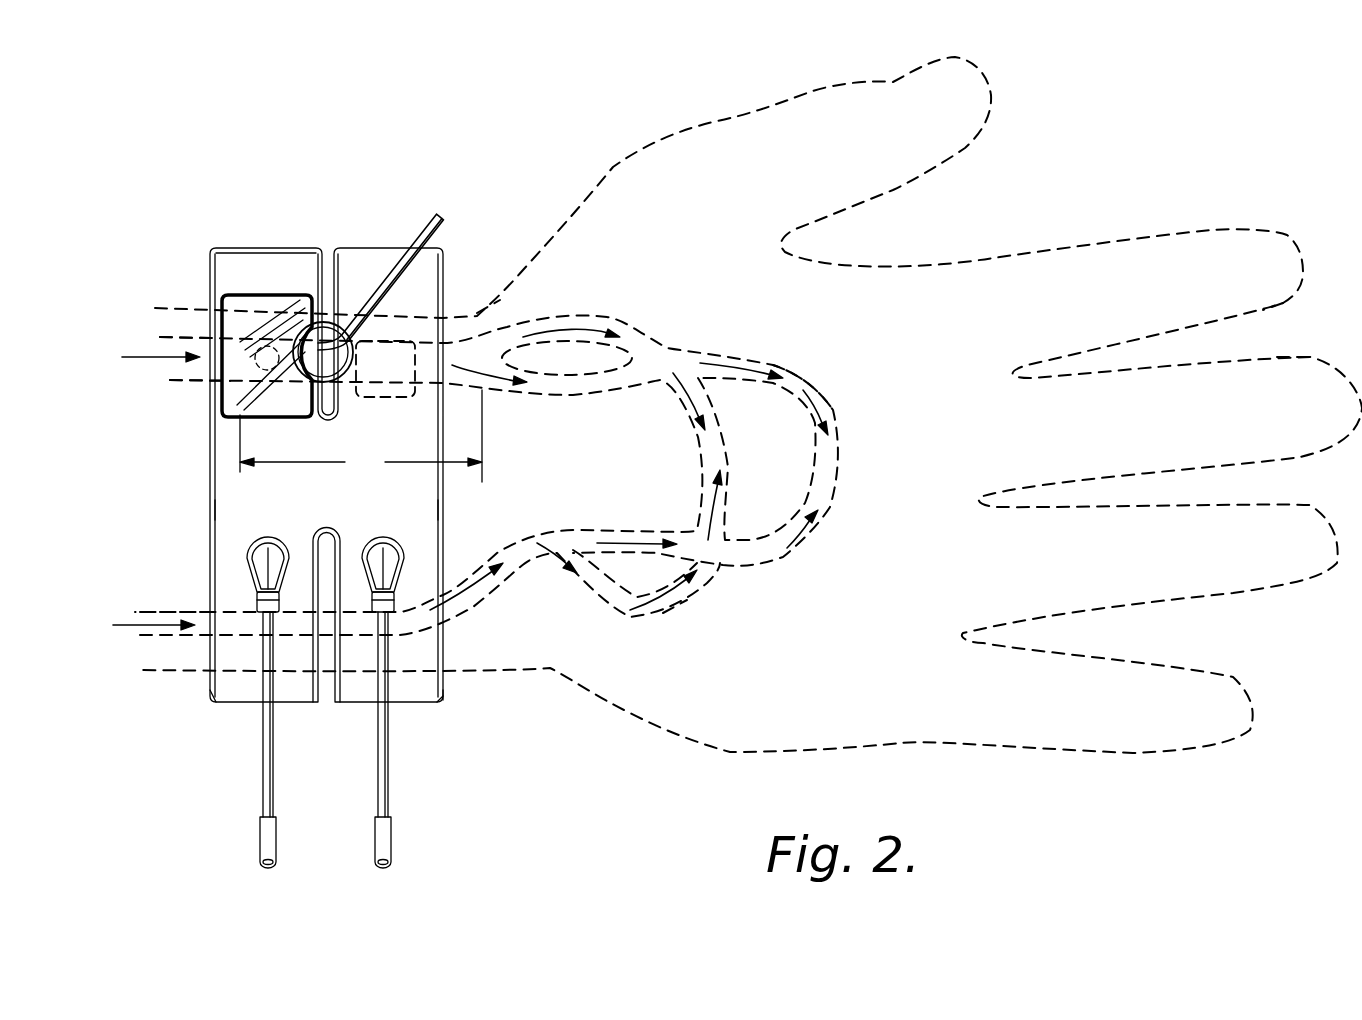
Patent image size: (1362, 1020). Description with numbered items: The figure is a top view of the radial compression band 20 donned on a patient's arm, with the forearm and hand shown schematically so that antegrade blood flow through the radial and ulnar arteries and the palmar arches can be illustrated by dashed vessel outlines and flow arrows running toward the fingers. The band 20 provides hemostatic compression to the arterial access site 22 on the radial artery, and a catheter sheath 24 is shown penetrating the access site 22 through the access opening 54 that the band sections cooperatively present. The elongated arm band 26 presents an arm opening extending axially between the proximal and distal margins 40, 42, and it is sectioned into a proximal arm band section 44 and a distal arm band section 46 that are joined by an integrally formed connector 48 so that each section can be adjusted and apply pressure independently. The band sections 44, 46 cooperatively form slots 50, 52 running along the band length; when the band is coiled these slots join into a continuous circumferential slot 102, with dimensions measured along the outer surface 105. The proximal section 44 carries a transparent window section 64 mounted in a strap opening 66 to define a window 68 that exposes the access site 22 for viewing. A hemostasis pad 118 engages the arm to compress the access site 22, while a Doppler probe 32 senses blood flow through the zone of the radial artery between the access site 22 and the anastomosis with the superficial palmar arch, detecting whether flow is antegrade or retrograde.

The radial compression band 20 is at (1137, 77).
The arterial access site 22 is at (268, 332).
The catheter sheath 24 is at (428, 220).
The arm band 26 is at (443, 700).
The Doppler probe 32 is at (375, 402).
The proximal margin 40 is at (212, 690).
The distal margin 42 is at (443, 683).
The proximal arm band section 44 is at (237, 250).
The distal arm band section 46 is at (378, 248).
The connector 48 is at (320, 500).
The slot 50 is at (330, 696).
The slot 52 is at (333, 255).
The access opening 54 is at (350, 340).
The transparent window section 64 is at (243, 392).
The strap opening 66 is at (215, 445).
The window 68 is at (228, 280).
The continuous circumferential slot 102 is at (332, 658).
The outer surface 105 is at (422, 516).
The hemostasis pad 118 is at (235, 357).